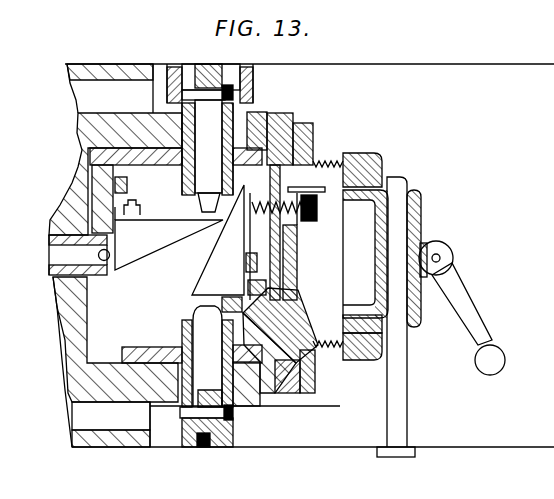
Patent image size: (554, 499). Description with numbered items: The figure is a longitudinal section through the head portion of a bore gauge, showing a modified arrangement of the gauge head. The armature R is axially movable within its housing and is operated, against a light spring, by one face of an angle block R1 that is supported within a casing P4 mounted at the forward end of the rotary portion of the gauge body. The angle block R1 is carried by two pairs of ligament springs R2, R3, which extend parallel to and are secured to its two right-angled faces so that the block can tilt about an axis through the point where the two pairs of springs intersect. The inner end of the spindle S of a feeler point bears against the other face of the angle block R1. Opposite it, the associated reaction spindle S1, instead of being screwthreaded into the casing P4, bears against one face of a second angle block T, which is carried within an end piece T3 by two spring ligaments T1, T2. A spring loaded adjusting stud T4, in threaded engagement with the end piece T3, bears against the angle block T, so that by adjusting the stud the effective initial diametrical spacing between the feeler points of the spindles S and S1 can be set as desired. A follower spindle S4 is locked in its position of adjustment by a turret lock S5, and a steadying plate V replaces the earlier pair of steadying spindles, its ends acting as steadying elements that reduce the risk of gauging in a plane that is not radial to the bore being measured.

The casing P4 is at (108, 120).
The ligament springs R2 is at (117, 187).
The ligament springs R3 is at (112, 212).
The armature R is at (75, 255).
The angle block R1 is at (132, 260).
The spindle S is at (207, 140).
The steadying plate V is at (252, 118).
The angle block T is at (290, 155).
The end piece T3 is at (343, 163).
The adjusting stud T4 is at (367, 162).
The turret lock S5 is at (483, 343).
The follower spindle S4 is at (397, 410).
The spring ligament T2 is at (320, 348).
The spring ligament T1 is at (310, 380).
The reaction spindle S1 is at (210, 367).